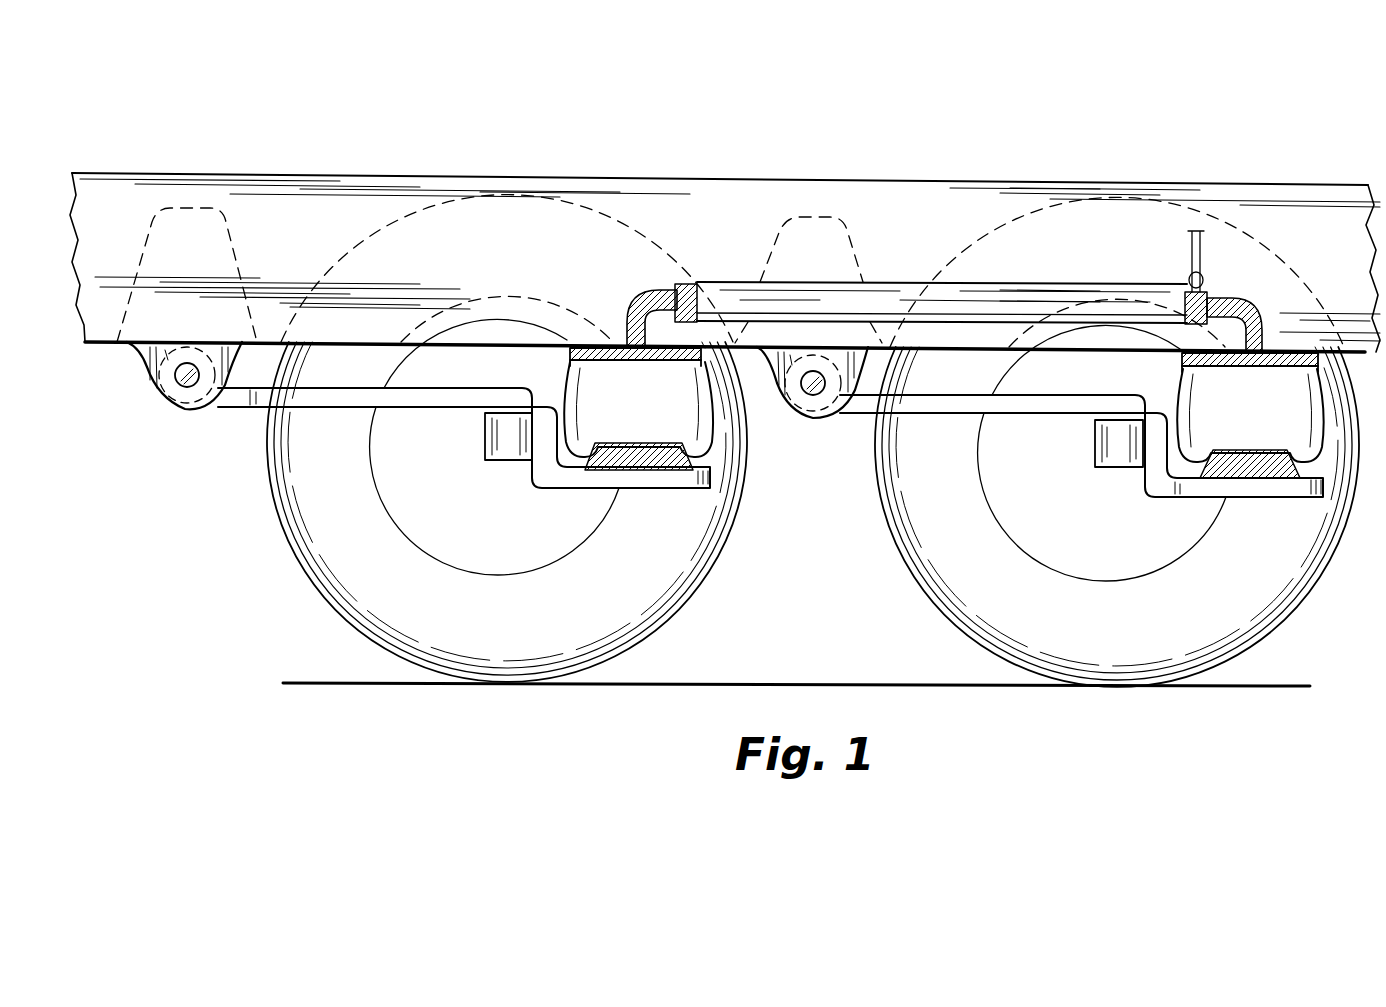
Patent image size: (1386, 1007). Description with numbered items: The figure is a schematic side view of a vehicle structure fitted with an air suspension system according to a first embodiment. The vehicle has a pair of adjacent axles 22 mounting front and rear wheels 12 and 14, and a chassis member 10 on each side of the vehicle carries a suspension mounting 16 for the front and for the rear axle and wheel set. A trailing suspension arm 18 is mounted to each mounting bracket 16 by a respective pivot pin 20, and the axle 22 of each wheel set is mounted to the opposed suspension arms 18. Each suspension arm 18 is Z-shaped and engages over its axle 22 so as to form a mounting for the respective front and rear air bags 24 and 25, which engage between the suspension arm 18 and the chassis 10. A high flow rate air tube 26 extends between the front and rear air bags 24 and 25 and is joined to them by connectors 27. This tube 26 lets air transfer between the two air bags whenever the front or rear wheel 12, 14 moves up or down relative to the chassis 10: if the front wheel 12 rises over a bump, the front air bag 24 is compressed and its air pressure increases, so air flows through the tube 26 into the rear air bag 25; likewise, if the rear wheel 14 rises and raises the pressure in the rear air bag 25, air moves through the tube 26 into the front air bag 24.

The chassis member 10 is at (396, 175).
The front wheel 12 is at (491, 636).
The rear wheel 14 is at (1106, 650).
The suspension mounting 16 is at (141, 360).
The trailing suspension arm 18 is at (326, 395).
The pivot pin 20 is at (187, 387).
The axle 22 is at (508, 455).
The front air bag 24 is at (618, 417).
The rear air bag 25 is at (1234, 424).
The high flow rate air tube 26 is at (826, 303).
The connector 27 is at (645, 284).